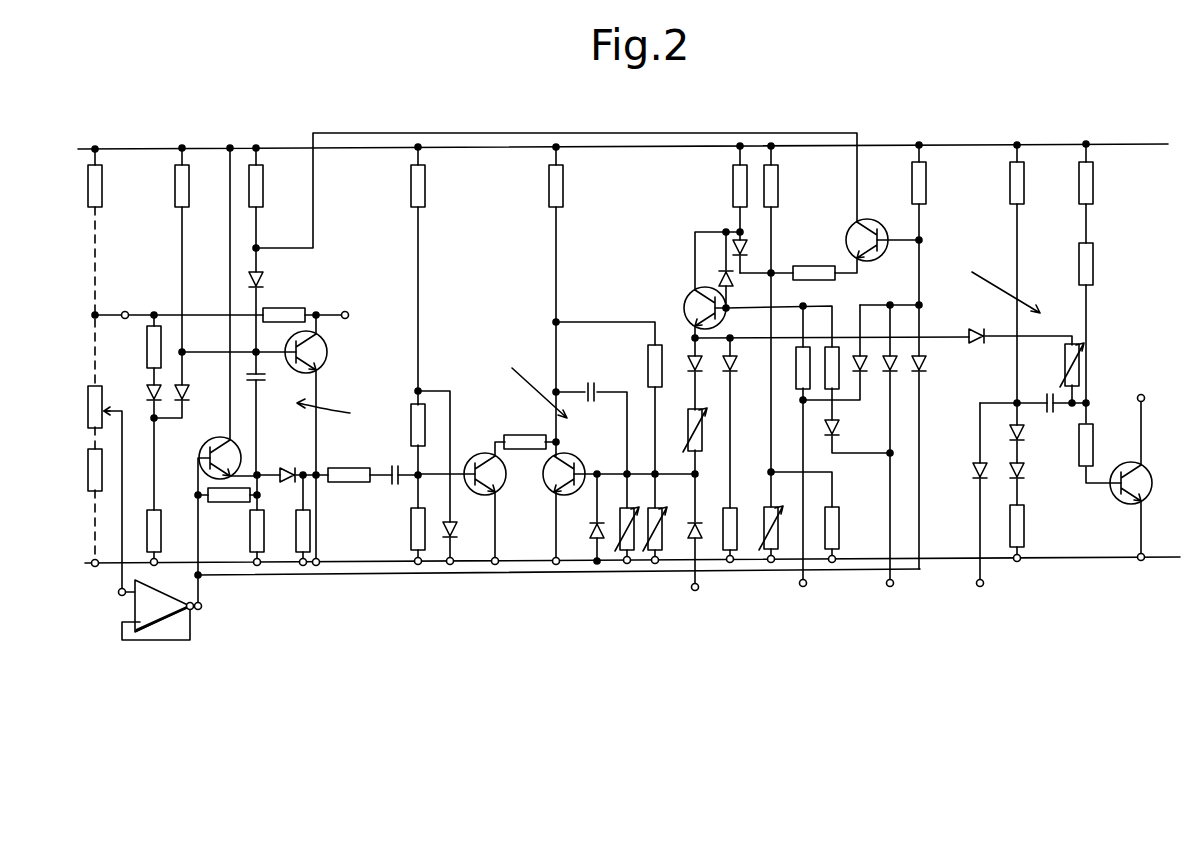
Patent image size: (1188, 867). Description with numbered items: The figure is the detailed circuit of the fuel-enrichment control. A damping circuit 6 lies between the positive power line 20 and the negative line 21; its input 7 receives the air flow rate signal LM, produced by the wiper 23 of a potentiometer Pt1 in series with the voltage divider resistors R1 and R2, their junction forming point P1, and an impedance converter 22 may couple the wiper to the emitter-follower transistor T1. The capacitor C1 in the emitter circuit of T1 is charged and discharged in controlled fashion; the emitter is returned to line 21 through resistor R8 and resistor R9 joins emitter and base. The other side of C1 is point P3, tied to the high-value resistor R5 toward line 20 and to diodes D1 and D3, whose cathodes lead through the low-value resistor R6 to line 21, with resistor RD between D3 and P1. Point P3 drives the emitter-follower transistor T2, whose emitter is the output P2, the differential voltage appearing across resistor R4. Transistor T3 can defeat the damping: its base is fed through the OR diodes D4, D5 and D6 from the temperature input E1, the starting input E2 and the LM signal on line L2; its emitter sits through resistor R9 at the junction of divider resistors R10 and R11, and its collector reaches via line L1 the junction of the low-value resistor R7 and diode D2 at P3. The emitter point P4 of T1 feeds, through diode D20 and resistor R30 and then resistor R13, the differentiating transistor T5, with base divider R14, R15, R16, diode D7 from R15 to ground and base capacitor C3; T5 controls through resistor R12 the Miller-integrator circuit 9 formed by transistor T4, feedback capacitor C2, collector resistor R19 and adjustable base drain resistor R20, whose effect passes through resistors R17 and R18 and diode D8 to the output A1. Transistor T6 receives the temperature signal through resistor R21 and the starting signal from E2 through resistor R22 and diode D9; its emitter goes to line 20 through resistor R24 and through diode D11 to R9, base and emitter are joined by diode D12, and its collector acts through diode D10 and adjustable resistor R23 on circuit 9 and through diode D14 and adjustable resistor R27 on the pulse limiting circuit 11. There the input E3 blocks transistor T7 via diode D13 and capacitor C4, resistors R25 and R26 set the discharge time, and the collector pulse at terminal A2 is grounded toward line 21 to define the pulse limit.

The positive power line 20 is at (140, 148).
The line L1 is at (538, 133).
The line L2 is at (390, 578).
The air flow rate signal LM is at (557, 587).
The resistor R1 is at (96, 191).
The circuit point P1 is at (125, 311).
The potentiometer Pt1 is at (106, 413).
The wiper 23 is at (112, 414).
The resistor R2 is at (103, 471).
The resistor R5 is at (183, 191).
The circuit point P3 is at (262, 350).
The diode D1 is at (186, 390).
The resistor RD is at (150, 352).
The diode D3 is at (147, 393).
The resistor R6 is at (157, 528).
The emitter-follower transistor T1 is at (213, 453).
The resistor R9 is at (826, 280).
The resistor R8 is at (272, 522).
The capacitor C1 is at (262, 378).
The resistor R7 is at (257, 191).
The diode D2 is at (262, 279).
The resistor R4 is at (290, 313).
The output P2 is at (358, 313).
The emitter-follower transistor T2 is at (322, 361).
The damping circuit 6 is at (328, 412).
The circuit point P4 is at (262, 471).
The diode D20 is at (290, 484).
The resistor R13 is at (345, 472).
The resistor R30 is at (311, 526).
The base control capacitor C3 is at (391, 469).
The resistor R14 is at (422, 191).
The resistor R15 is at (413, 429).
The resistor R16 is at (411, 526).
The diode D7 is at (457, 526).
The transistor T5 is at (477, 462).
The resistor R12 is at (520, 438).
The enrichment circuit 9 is at (531, 386).
The collector resistor R19 is at (562, 191).
The transistor T4 is at (578, 458).
The feedback capacitor C2 is at (588, 386).
The base drain resistor R20 is at (621, 552).
The resistor R18 is at (656, 552).
The resistor R17 is at (648, 362).
The transistor T6 is at (685, 308).
The diode D10 is at (694, 368).
The adjustable resistor R23 is at (690, 446).
The diode D8 is at (692, 526).
The output signal A1 is at (694, 591).
The resistor R24 is at (736, 192).
The diode D11 is at (746, 250).
The diode D12 is at (733, 283).
The voltage divider resistor R10 is at (778, 191).
The transistor T3 is at (866, 229).
The diode D6 is at (925, 372).
The resistor R21 is at (798, 380).
The input E1 is at (801, 587).
The resistor R22 is at (836, 396).
The diode D9 is at (838, 432).
The diode D4 is at (864, 373).
The diode D5 is at (894, 373).
The input E2 is at (889, 587).
The voltage divider resistor R11 is at (765, 513).
The diode D14 is at (971, 336).
The pulse limiting circuit 11 is at (998, 285).
The adjustable resistor R27 is at (1066, 368).
The capacitor C4 is at (1048, 397).
The diode D13 is at (973, 466).
The input E3 is at (979, 587).
The discharge resistor R25 is at (1090, 183).
The resistor R26 is at (1090, 266).
The transistor T7 is at (1146, 493).
The terminal A2 is at (1141, 394).
The impedance converter 22 is at (149, 607).
The input 7 is at (204, 606).
The negative power line 21 is at (204, 562).